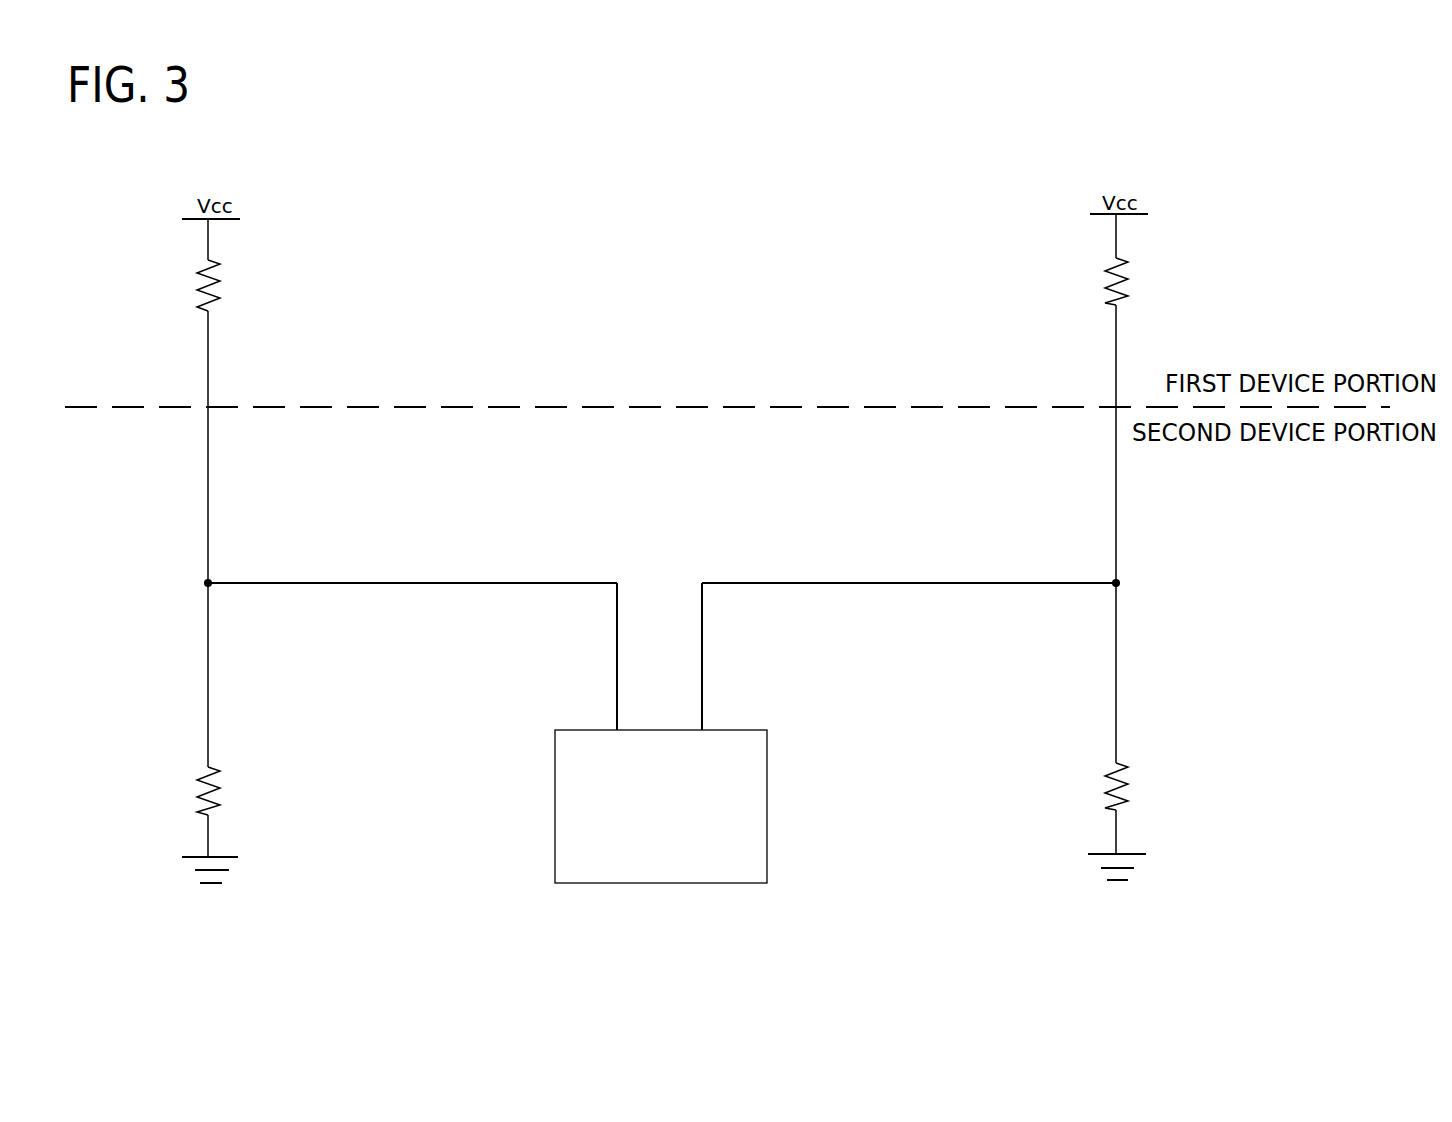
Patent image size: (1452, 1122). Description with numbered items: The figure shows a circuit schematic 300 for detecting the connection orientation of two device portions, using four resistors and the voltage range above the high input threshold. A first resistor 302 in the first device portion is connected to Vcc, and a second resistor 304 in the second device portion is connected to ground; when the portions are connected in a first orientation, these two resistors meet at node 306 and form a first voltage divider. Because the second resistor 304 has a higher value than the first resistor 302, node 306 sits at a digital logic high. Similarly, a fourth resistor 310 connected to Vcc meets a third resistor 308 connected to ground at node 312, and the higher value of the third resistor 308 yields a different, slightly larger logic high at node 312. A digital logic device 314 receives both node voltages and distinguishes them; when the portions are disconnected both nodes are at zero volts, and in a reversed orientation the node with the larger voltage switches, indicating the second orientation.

The circuit schematic 300 is at (750, 178).
The first resistor 302 is at (227, 290).
The second resistor 304 is at (223, 797).
The node 306 is at (210, 580).
The third resistor 308 is at (1097, 800).
The fourth resistor 310 is at (1097, 286).
The node 312 is at (1114, 588).
The digital logic device 314 is at (679, 861).